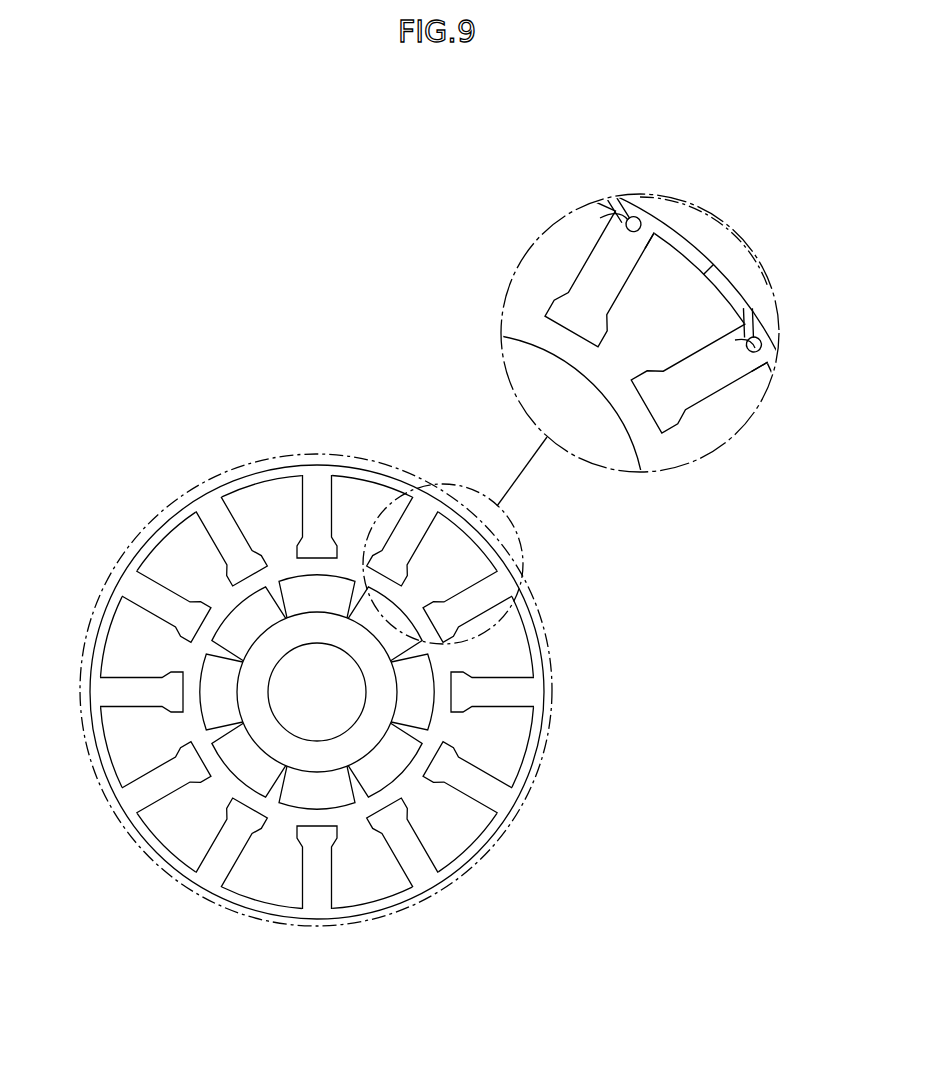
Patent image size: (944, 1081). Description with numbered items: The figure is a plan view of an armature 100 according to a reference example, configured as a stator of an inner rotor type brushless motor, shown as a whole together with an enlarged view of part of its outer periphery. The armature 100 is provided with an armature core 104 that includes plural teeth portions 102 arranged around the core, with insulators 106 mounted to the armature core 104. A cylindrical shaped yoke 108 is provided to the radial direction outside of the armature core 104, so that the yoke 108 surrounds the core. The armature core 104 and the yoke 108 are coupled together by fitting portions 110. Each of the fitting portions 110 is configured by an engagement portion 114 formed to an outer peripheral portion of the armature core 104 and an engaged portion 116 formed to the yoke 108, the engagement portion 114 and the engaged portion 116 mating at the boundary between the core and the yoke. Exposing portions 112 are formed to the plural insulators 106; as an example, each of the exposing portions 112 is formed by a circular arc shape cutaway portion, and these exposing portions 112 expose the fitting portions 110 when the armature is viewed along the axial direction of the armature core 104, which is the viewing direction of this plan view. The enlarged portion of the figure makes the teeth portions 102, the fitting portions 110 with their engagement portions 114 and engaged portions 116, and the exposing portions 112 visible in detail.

The armature 100 is at (321, 398).
The teeth portions 102 is at (303, 520).
The armature core 104 is at (128, 545).
The insulators 106 is at (252, 478).
The yoke 108 is at (341, 455).
The fitting portions 110 is at (646, 213).
The exposing portions 112 is at (634, 232).
The engagement portion 114 is at (622, 208).
The engaged portion 116 is at (600, 218).